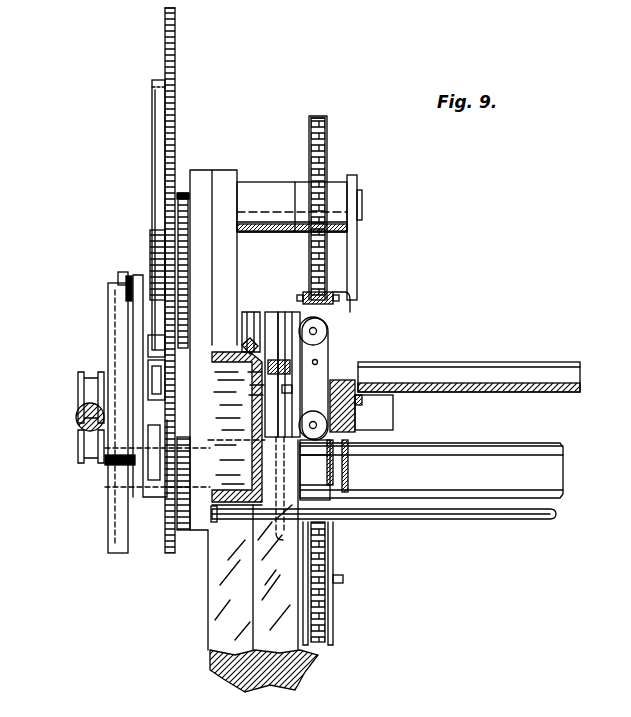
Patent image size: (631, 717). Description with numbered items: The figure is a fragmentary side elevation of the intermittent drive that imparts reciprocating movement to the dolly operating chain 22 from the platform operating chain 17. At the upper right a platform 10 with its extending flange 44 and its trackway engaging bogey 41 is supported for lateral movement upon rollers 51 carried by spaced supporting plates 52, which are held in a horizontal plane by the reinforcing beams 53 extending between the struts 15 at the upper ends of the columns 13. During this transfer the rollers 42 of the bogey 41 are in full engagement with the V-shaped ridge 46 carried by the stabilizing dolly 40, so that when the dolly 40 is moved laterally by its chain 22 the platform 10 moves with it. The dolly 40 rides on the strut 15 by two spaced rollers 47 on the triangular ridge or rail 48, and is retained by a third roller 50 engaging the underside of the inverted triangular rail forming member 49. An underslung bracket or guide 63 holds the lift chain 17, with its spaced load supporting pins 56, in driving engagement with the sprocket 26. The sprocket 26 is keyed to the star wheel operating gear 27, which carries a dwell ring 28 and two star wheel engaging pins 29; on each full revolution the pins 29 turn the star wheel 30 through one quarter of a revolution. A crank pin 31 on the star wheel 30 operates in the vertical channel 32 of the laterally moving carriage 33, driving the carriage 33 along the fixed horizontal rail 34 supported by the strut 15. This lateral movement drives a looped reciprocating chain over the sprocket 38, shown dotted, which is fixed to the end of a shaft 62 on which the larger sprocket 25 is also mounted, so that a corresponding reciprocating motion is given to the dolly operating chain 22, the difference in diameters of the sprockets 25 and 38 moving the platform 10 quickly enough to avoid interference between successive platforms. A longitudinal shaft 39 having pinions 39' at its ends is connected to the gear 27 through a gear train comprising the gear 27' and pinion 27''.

The platform 10 is at (500, 355).
The column 13 is at (288, 654).
The strut 15 is at (254, 449).
The lift operating chain 17 is at (318, 604).
The dolly operating chain 22 is at (278, 330).
The larger sprocket 25 is at (283, 540).
The sprocket 26 is at (325, 150).
The star wheel operating gear 27 is at (178, 283).
The gear 27' is at (204, 270).
The pinion 27'' is at (183, 280).
The dwell ring 28 is at (158, 108).
The star wheel engaging pins 29 is at (150, 348).
The star wheel 30 is at (160, 485).
The crank pin 31 is at (120, 275).
The vertical channel 32 is at (112, 518).
The laterally moving carriage 33 is at (258, 392).
The fixed horizontal rail 34 is at (82, 418).
The sprocket 38 is at (118, 475).
The longitudinal shaft 39 is at (383, 525).
The pinion 39' is at (183, 510).
The stabilizing dolly 40 is at (292, 388).
The bogey 41 is at (330, 332).
The rollers 42 is at (315, 413).
The extending flange 44 is at (345, 385).
The V-shaped ridge 46 is at (302, 300).
The rollers 47 is at (248, 318).
The triangular ridge or rail 48 is at (242, 344).
The inverted triangular rail forming member 49 is at (262, 398).
The third roller 50 is at (283, 485).
The rollers 51 is at (345, 460).
The supporting plates 52 is at (316, 470).
The reinforcing beams 53 is at (438, 462).
The pins 56 is at (342, 580).
The shaft 62 is at (192, 473).
The underslung bracket or guide 63 is at (350, 240).